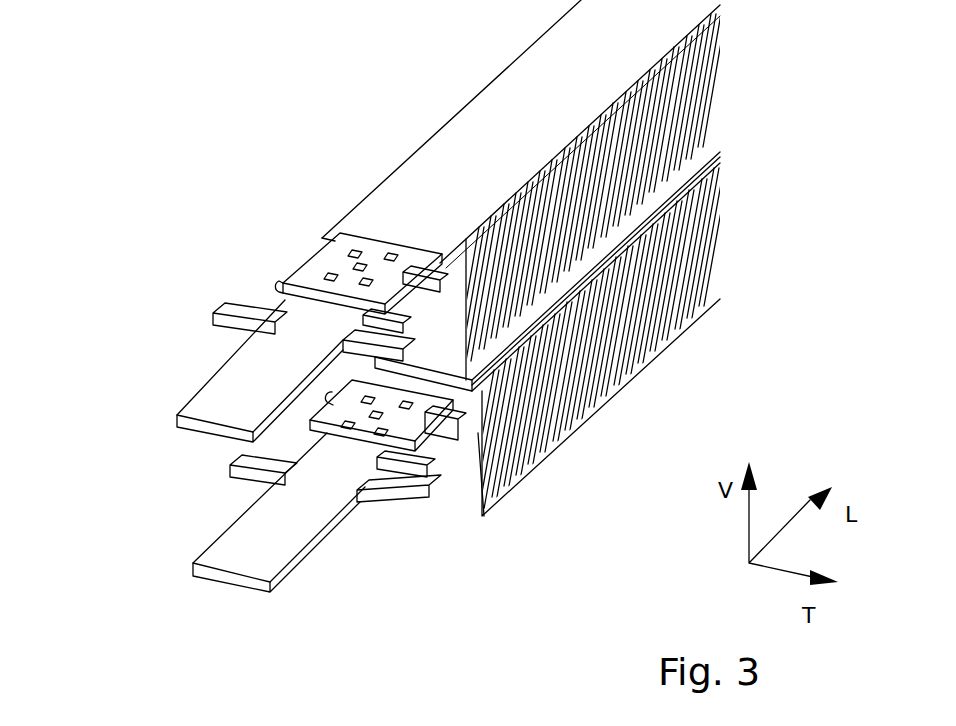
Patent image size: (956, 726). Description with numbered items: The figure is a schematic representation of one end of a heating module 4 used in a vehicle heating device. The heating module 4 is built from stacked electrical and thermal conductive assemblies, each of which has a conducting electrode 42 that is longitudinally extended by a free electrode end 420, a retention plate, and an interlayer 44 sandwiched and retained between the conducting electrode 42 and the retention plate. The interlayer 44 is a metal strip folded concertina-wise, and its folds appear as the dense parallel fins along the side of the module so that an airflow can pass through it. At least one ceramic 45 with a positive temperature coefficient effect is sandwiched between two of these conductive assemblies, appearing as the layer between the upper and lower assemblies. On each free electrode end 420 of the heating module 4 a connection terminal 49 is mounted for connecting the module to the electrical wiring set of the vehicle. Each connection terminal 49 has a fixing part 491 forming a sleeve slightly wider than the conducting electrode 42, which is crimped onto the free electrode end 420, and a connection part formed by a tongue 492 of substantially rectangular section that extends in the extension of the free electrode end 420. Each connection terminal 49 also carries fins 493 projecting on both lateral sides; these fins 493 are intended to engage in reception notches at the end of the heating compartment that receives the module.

The heating module 4 is at (165, 122).
The conducting electrode 42 is at (497, 105).
The free electrode end 420 is at (358, 212).
The interlayer 44 is at (720, 77).
The ceramic 45 is at (723, 160).
The connection terminal 49 is at (207, 372).
The fixing part 491 is at (280, 272).
The tongue 492 is at (207, 398).
The fin 493 is at (213, 308).